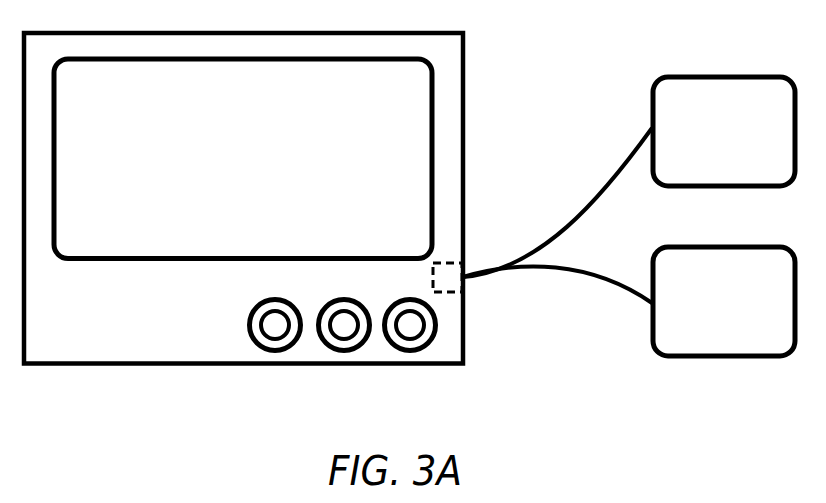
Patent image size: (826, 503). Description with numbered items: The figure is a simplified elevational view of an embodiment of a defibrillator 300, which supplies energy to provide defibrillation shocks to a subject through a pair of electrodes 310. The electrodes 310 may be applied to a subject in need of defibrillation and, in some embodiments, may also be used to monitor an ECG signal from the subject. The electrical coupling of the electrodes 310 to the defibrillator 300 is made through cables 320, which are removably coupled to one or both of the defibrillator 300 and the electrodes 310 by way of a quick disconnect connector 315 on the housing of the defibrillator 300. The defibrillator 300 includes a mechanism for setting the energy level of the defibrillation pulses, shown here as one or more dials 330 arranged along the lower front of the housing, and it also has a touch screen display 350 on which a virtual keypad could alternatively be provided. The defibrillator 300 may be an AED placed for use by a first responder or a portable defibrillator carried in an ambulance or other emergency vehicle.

The defibrillator 300 is at (74, 330).
The touch screen display 350 is at (333, 122).
The dials 330 is at (440, 350).
The quick disconnect connector 315 is at (453, 283).
The cables 320 is at (557, 238).
The electrodes 310 is at (698, 136).